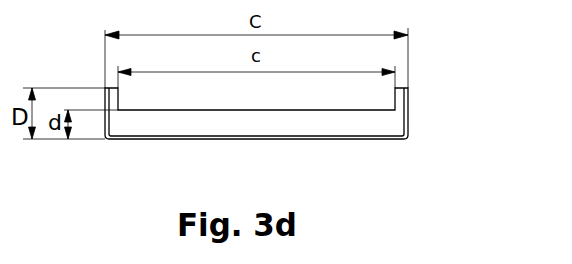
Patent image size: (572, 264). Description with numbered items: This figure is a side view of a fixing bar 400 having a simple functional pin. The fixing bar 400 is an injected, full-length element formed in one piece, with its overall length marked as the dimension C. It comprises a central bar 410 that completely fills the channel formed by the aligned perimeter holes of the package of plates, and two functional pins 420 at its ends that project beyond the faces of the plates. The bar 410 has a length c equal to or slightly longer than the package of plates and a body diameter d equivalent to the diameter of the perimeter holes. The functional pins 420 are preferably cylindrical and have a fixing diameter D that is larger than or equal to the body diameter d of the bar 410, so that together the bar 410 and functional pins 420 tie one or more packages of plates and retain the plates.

The fixing bar 400 is at (75, 62).
The bar 410 is at (253, 124).
The functional pin 420 is at (410, 113).